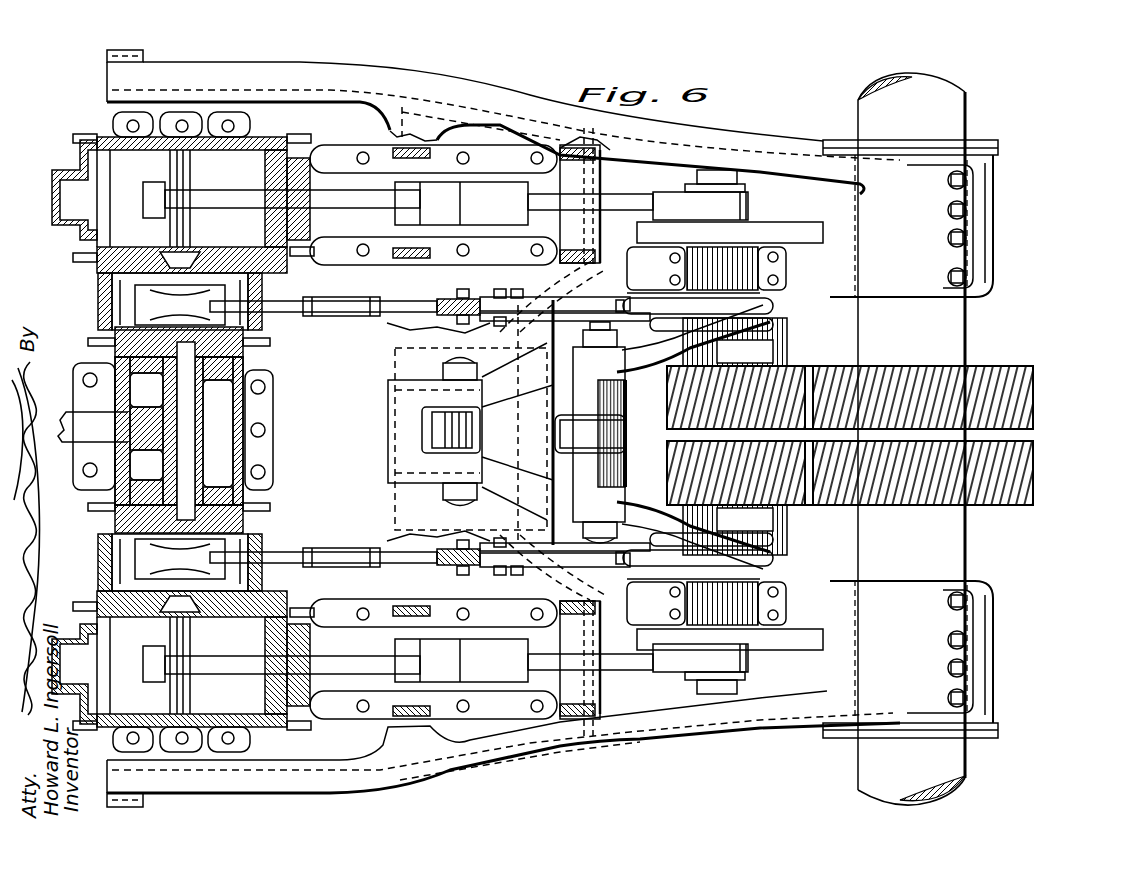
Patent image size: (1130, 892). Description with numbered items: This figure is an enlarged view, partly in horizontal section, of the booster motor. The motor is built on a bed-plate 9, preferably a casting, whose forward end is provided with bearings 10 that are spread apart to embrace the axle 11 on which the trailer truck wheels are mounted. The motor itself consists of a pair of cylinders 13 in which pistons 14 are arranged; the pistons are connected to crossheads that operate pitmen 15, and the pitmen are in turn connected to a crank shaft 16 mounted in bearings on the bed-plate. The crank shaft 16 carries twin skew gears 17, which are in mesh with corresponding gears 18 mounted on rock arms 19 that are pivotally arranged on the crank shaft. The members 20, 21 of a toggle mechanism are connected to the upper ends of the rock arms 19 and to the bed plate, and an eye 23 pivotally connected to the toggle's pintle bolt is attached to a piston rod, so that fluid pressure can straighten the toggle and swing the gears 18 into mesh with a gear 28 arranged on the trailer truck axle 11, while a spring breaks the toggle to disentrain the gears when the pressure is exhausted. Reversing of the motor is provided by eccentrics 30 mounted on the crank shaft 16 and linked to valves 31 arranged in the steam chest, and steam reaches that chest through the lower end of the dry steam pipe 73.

The bed-plate 9 is at (441, 92).
The bearings 10 is at (910, 439).
The axle 11 is at (950, 347).
The cylinders 13 is at (112, 205).
The pistons 14 is at (190, 186).
The pitmen 15 is at (613, 203).
The crank shaft 16 is at (730, 292).
The twin skew gears 17 is at (668, 396).
The gears 18 is at (788, 378).
The rock arms 19 is at (735, 436).
The toggle member 20 is at (693, 437).
The toggle member 21 is at (470, 422).
The eye 23 is at (590, 432).
The gear 28 is at (1018, 470).
The eccentrics 30 is at (648, 297).
The valves 31 is at (180, 432).
The dry steam pipe 73 is at (68, 415).